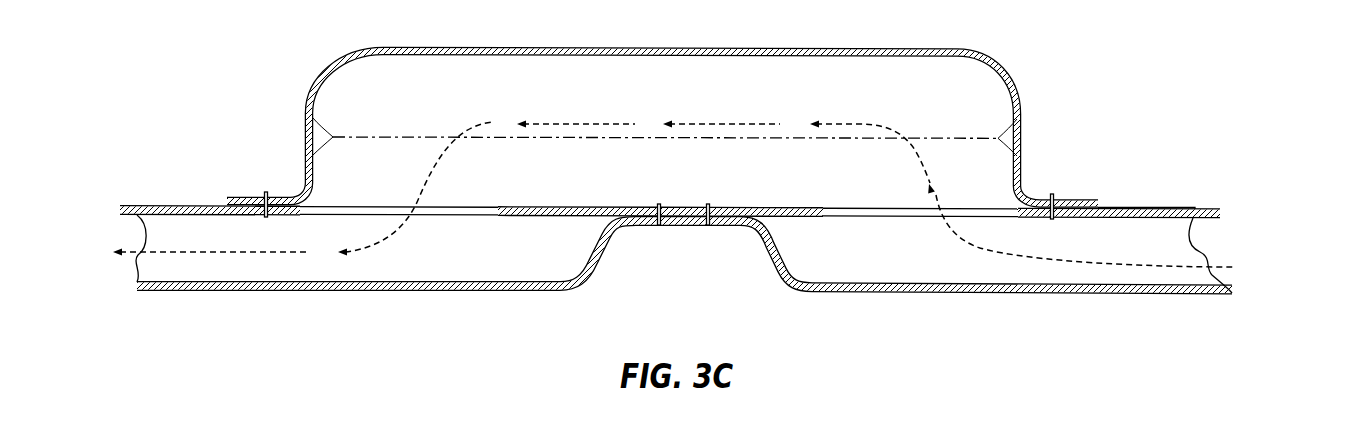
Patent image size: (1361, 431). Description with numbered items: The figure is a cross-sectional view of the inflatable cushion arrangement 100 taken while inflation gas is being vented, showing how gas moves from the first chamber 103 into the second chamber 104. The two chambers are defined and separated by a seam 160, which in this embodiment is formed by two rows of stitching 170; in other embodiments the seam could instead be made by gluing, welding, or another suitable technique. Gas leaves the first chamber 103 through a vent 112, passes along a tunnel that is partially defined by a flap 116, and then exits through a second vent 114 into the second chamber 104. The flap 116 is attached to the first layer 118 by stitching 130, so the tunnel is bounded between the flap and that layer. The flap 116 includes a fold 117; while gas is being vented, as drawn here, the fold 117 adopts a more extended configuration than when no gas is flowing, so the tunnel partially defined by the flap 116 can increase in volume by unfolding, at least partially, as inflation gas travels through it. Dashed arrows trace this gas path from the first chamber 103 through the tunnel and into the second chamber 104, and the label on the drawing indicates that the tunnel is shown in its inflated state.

The inflatable device assembly 100 is at (1220, 102).
The first chamber 103 is at (1192, 252).
The second chamber 104 is at (218, 263).
The vent 112 is at (906, 218).
The vent 114 is at (420, 216).
The flap 116 is at (578, 50).
The fold 117 is at (931, 137).
The first layer 118 is at (762, 207).
The stitching 130 is at (269, 191).
The seam 160 is at (683, 207).
The stitching 170 is at (708, 227).